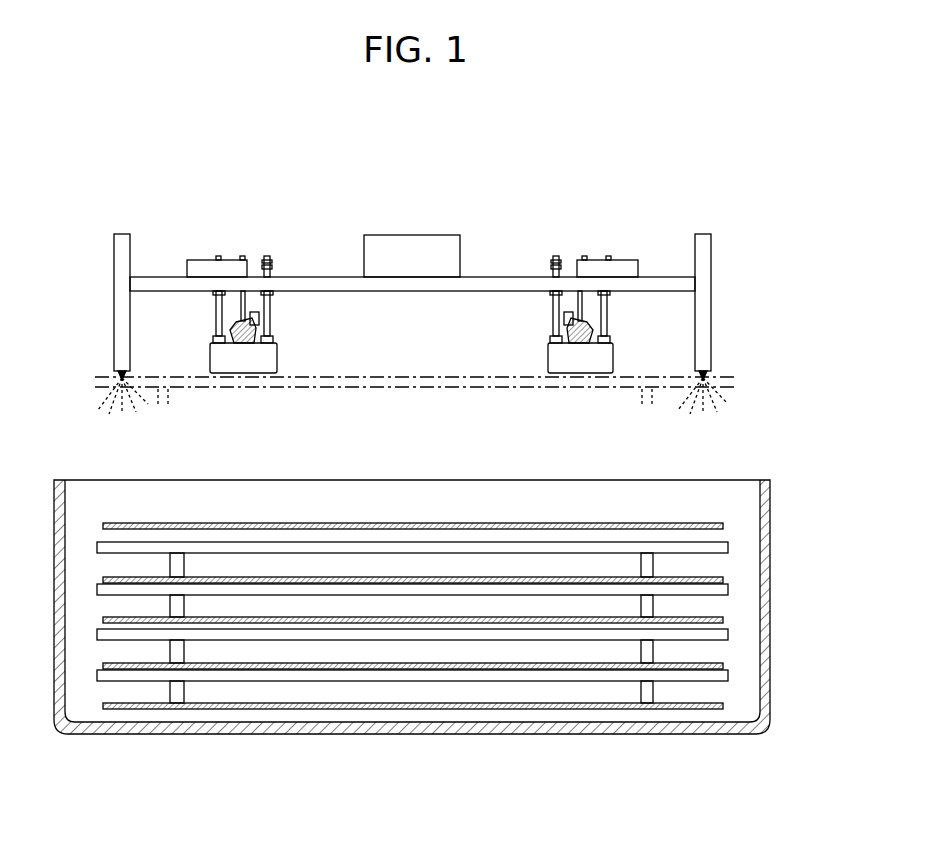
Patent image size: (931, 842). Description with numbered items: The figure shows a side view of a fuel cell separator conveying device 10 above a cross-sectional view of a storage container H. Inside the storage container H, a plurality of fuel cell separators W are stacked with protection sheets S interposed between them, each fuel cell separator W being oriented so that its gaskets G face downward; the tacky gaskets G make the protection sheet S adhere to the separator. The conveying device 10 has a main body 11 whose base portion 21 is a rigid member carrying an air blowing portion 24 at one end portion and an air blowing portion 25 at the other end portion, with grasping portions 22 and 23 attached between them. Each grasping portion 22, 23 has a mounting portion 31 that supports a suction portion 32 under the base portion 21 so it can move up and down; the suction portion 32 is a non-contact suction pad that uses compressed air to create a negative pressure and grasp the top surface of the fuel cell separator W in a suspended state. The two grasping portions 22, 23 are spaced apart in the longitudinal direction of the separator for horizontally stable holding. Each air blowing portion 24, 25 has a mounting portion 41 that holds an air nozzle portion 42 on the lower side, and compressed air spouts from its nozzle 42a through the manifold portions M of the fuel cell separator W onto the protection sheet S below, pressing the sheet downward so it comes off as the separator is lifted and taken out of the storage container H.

The fuel cell separator conveying device 10 is at (592, 152).
The main body 11 is at (411, 233).
The base portion 21 is at (500, 276).
The grasping portion 22 is at (283, 320).
The grasping portion 23 is at (540, 318).
The air blowing portion 24 is at (117, 230).
The air blowing portion 25 is at (709, 232).
The mounting portion 31 is at (213, 293).
The suction portion 32 is at (210, 352).
The mounting portion 41 is at (130, 272).
The air nozzle portion 42 is at (114, 350).
The nozzle 42a is at (118, 384).
The manifold portion M is at (132, 378).
The gasket G is at (162, 392).
The fuel cell separator W is at (418, 389).
The protection sheet S is at (370, 522).
The storage container H is at (771, 515).